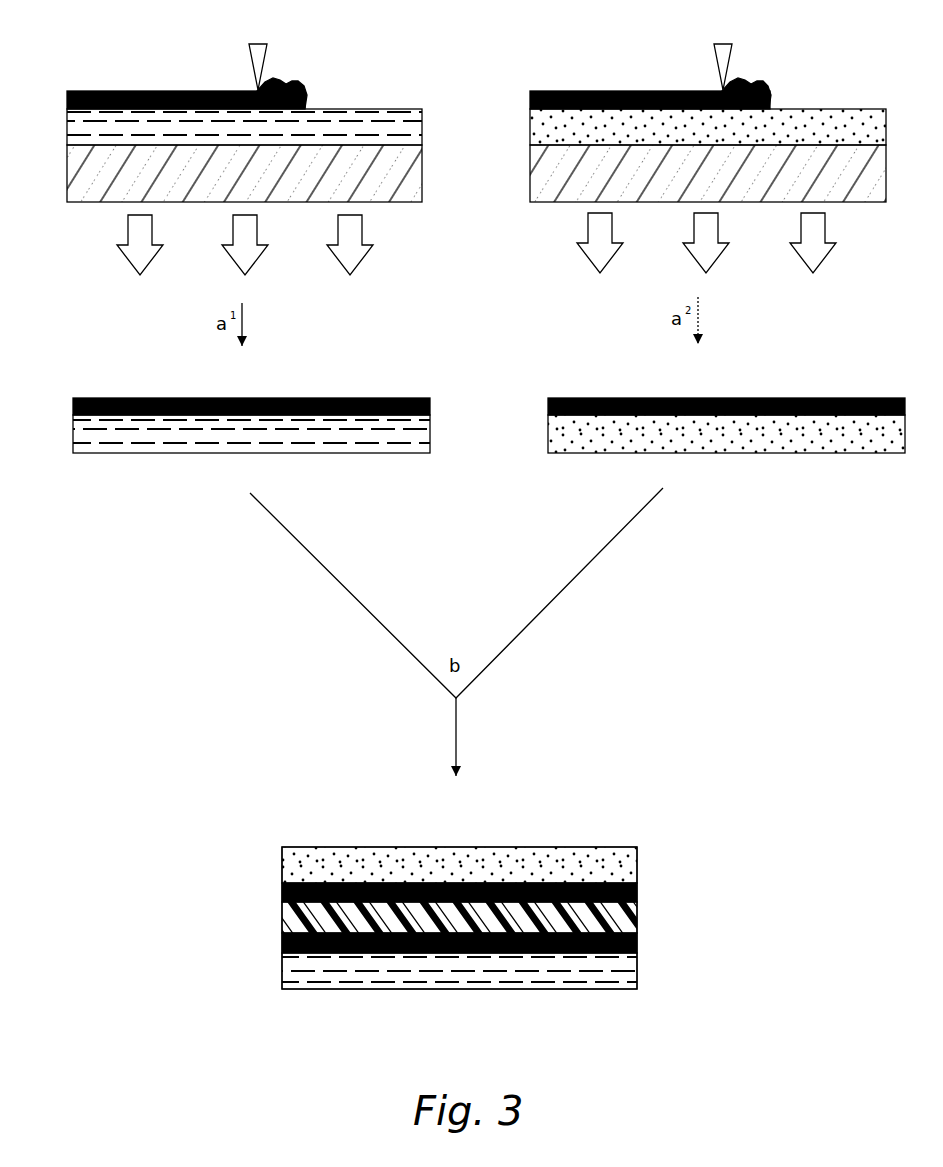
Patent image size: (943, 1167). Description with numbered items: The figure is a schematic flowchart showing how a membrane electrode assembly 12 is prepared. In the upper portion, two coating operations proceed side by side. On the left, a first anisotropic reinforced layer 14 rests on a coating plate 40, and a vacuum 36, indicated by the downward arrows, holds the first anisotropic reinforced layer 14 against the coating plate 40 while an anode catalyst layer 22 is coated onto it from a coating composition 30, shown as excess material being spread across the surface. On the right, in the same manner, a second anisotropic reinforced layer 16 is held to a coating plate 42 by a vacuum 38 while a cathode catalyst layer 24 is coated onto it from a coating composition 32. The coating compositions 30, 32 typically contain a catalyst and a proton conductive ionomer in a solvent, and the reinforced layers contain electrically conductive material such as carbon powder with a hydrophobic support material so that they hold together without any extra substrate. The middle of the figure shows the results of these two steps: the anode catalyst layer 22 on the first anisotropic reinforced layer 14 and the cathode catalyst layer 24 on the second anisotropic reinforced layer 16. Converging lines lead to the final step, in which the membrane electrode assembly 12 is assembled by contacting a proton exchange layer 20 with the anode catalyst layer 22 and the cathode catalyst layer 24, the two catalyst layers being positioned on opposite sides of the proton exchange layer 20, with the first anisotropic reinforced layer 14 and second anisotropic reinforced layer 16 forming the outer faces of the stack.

The membrane electrode assembly 12 is at (617, 801).
The first anisotropic reinforced layer 14 is at (66, 128).
The second anisotropic reinforced layer 16 is at (530, 126).
The proton exchange layer 20 is at (637, 925).
The anode catalyst layer 22 is at (120, 92).
The cathode catalyst layer 24 is at (600, 92).
The coating composition 30 is at (288, 84).
The coating composition 32 is at (752, 85).
The vacuum 36 is at (88, 246).
The vacuum 38 is at (536, 246).
The coating plate 40 is at (67, 162).
The coating plate 42 is at (530, 162).